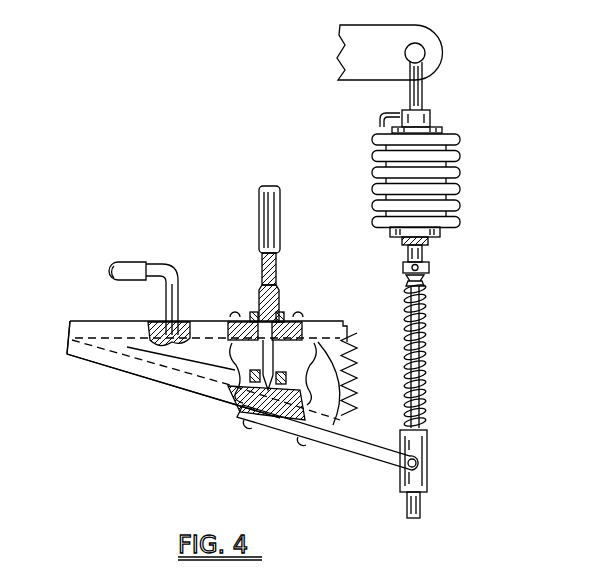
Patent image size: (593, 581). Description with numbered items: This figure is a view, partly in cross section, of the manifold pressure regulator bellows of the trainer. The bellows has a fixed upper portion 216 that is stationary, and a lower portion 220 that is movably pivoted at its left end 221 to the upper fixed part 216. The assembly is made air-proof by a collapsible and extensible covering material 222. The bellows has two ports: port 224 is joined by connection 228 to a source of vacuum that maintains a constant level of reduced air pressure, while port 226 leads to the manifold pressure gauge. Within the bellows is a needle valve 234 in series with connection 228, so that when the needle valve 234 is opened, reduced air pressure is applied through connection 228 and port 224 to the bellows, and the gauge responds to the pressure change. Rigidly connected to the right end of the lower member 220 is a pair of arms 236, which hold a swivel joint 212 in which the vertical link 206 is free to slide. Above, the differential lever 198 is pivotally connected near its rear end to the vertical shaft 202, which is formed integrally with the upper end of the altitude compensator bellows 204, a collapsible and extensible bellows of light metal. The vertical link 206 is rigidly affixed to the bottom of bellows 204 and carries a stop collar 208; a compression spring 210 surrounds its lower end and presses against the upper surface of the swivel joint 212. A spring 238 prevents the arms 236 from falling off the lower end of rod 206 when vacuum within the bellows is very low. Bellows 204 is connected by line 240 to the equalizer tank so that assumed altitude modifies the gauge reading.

The differential lever 198 is at (364, 74).
The vertical shaft 202 is at (425, 97).
The altitude compensator bellows 204 is at (455, 168).
The vertical link 206 is at (423, 258).
The stop collar 208 is at (432, 268).
The compression spring 210 is at (430, 322).
The swivel joint 212 is at (433, 453).
The fixed upper portion 216 is at (210, 330).
The lower portion 220 is at (188, 391).
The left end 221 is at (68, 341).
The collapsible and extensible covering material 222 is at (170, 366).
The port 224 is at (274, 272).
The port 226 is at (153, 320).
The connection 228 is at (276, 222).
The needle valve 234 is at (258, 350).
The pair of arms 236 is at (360, 448).
The spring 238 is at (353, 391).
The line 240 is at (382, 115).